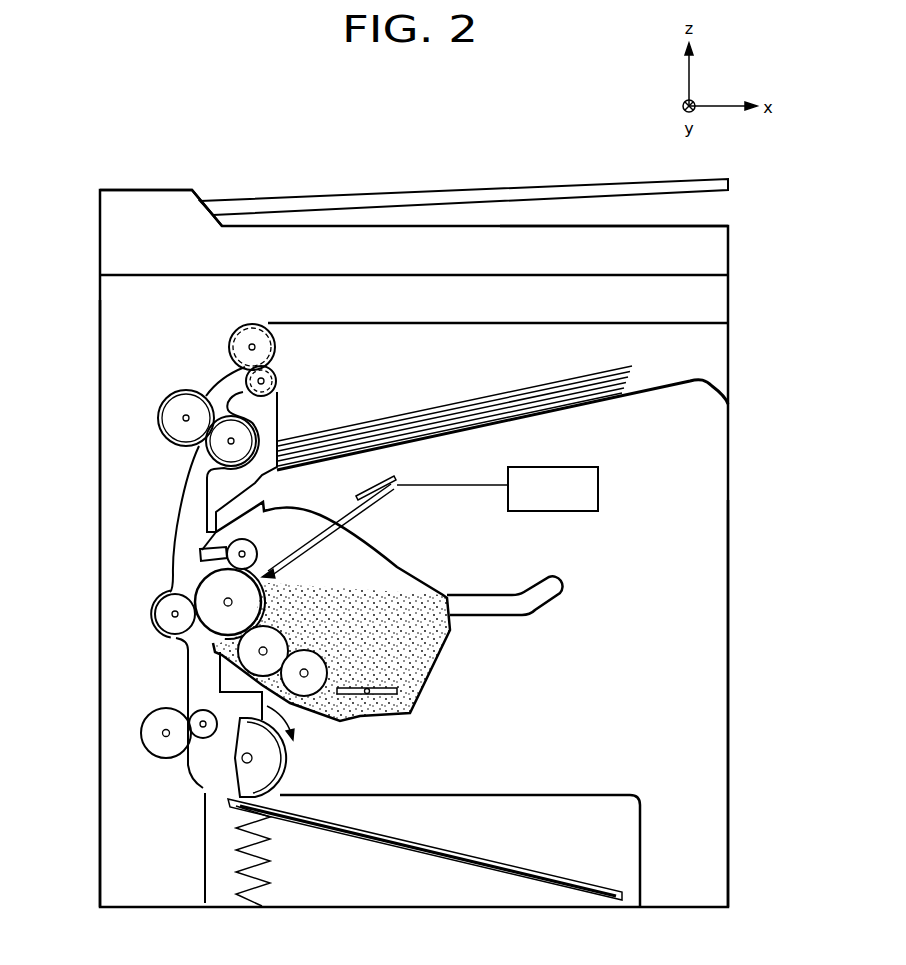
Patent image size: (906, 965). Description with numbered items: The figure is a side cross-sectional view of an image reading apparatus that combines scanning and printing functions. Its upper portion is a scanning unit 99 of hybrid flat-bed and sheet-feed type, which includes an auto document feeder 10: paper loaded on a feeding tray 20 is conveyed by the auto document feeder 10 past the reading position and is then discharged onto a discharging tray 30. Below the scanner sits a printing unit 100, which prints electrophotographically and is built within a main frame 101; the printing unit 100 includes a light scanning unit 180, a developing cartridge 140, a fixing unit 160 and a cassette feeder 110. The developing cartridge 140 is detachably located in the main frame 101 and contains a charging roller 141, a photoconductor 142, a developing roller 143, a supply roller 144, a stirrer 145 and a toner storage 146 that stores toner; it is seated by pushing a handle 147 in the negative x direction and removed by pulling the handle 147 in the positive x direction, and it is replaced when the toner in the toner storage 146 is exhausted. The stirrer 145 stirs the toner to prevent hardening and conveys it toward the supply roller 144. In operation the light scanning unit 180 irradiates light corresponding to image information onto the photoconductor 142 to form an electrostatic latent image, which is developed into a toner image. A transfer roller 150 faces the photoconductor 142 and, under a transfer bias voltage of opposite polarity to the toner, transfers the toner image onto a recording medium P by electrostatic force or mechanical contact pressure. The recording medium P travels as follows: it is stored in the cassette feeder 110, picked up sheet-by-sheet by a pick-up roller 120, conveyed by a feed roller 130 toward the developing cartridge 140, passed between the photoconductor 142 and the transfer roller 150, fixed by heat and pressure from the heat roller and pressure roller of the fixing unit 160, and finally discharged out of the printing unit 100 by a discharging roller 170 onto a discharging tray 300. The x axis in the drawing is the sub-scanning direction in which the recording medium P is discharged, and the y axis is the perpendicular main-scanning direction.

The scanning unit 99 is at (92, 225).
The auto document feeder 10 is at (166, 203).
The feeding tray 20 is at (638, 183).
The discharging tray 30 is at (705, 222).
The printing unit 100 is at (89, 624).
The main frame 101 is at (730, 697).
The cassette feeder 110 is at (642, 839).
The pick-up roller 120 is at (302, 768).
The feed roller 130 is at (153, 756).
The developing cartridge 140 is at (425, 565).
The charging roller 141 is at (223, 548).
The photoconductor 142 is at (203, 587).
The developing roller 143 is at (281, 636).
The supply roller 144 is at (323, 662).
The stirrer 145 is at (389, 687).
The toner storage 146 is at (365, 552).
The handle 147 is at (549, 601).
The transfer roller 150 is at (161, 634).
The fixing unit 160 is at (197, 448).
The discharging roller 170 is at (275, 373).
The light scanning unit 180 is at (577, 465).
The discharging tray 300 is at (690, 380).
The recording medium P is at (558, 380).